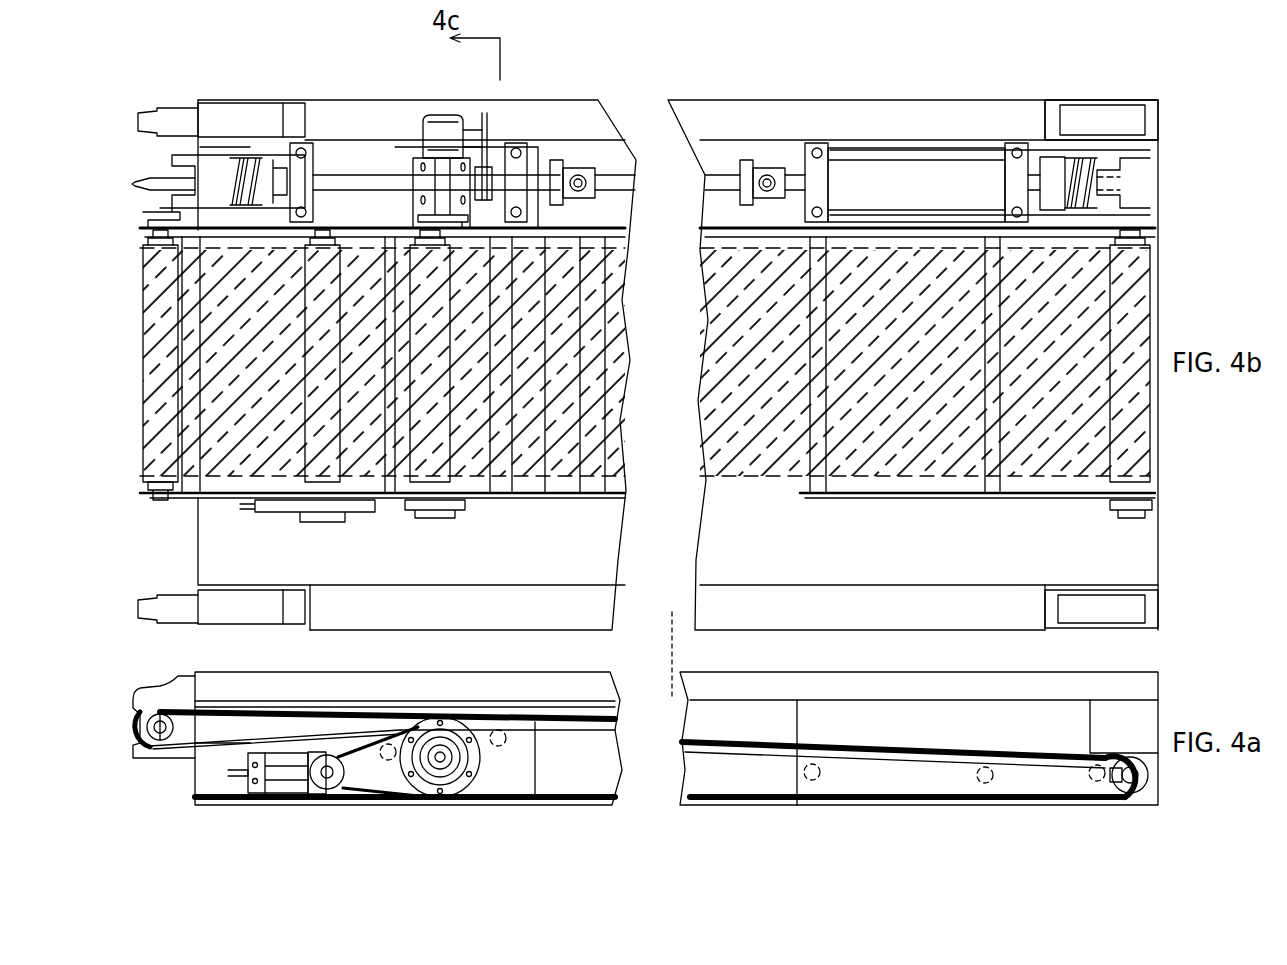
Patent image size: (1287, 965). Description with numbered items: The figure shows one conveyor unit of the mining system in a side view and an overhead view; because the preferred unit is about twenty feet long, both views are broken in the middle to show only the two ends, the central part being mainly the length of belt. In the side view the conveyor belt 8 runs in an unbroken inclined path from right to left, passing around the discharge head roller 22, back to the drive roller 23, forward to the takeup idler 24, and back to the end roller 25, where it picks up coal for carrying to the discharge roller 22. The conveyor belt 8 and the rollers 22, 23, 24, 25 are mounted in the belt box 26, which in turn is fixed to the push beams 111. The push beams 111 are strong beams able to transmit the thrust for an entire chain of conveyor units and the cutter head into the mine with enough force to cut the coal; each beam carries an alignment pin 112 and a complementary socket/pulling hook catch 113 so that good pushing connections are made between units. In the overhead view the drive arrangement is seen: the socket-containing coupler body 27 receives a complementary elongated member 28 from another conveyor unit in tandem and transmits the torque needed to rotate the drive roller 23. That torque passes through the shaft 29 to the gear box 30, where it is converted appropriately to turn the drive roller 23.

In FIG. 4B, the conveyor belt 8 is at (700, 265).
In FIG. 4A, the conveyor belt 8 is at (395, 795).
In FIG. 4A, the discharge head roller 22 is at (138, 722).
In FIG. 4B, the drive roller 23 is at (440, 520).
In FIG. 4A, the drive roller 23 is at (460, 795).
In FIG. 4A, the takeup idler 24 is at (310, 792).
In FIG. 4A, the end roller 25 is at (1155, 803).
In FIG. 4B, the belt box 26 is at (1115, 510).
In FIG. 4B, the socket-containing coupler body 27 is at (1150, 185).
In FIG. 4B, the elongated member 28 is at (135, 184).
In FIG. 4B, the shaft 29 is at (887, 150).
In FIG. 4B, the gear box 30 is at (430, 110).
In FIG. 4B, the push beam 111 is at (1040, 100).
In FIG. 4B, the alignment pin 112 is at (170, 88).
In FIG. 4B, the socket/pulling hook catch 113 is at (1140, 115).